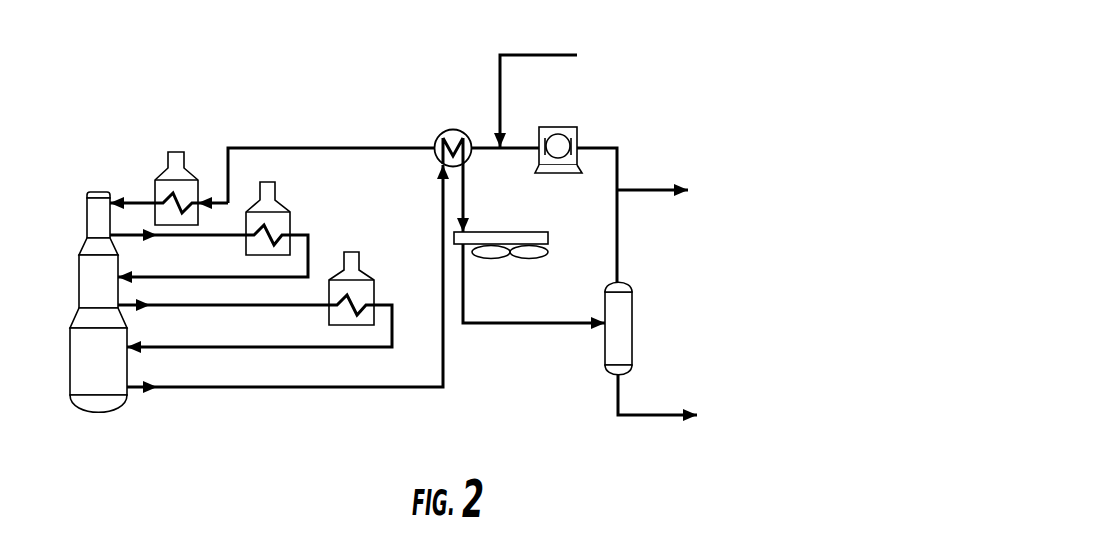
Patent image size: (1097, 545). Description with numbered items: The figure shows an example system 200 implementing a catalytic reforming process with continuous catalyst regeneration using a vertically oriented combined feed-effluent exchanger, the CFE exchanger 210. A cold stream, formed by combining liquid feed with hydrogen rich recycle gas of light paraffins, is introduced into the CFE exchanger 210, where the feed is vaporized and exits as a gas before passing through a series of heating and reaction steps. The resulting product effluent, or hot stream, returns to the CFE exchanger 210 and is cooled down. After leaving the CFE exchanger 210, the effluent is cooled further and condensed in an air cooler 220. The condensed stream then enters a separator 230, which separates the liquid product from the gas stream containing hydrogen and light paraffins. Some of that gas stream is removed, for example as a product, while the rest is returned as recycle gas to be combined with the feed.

The system 200 is at (348, 67).
The CFE exchanger 210 is at (472, 94).
The air cooler 220 is at (528, 292).
The separator 230 is at (717, 362).